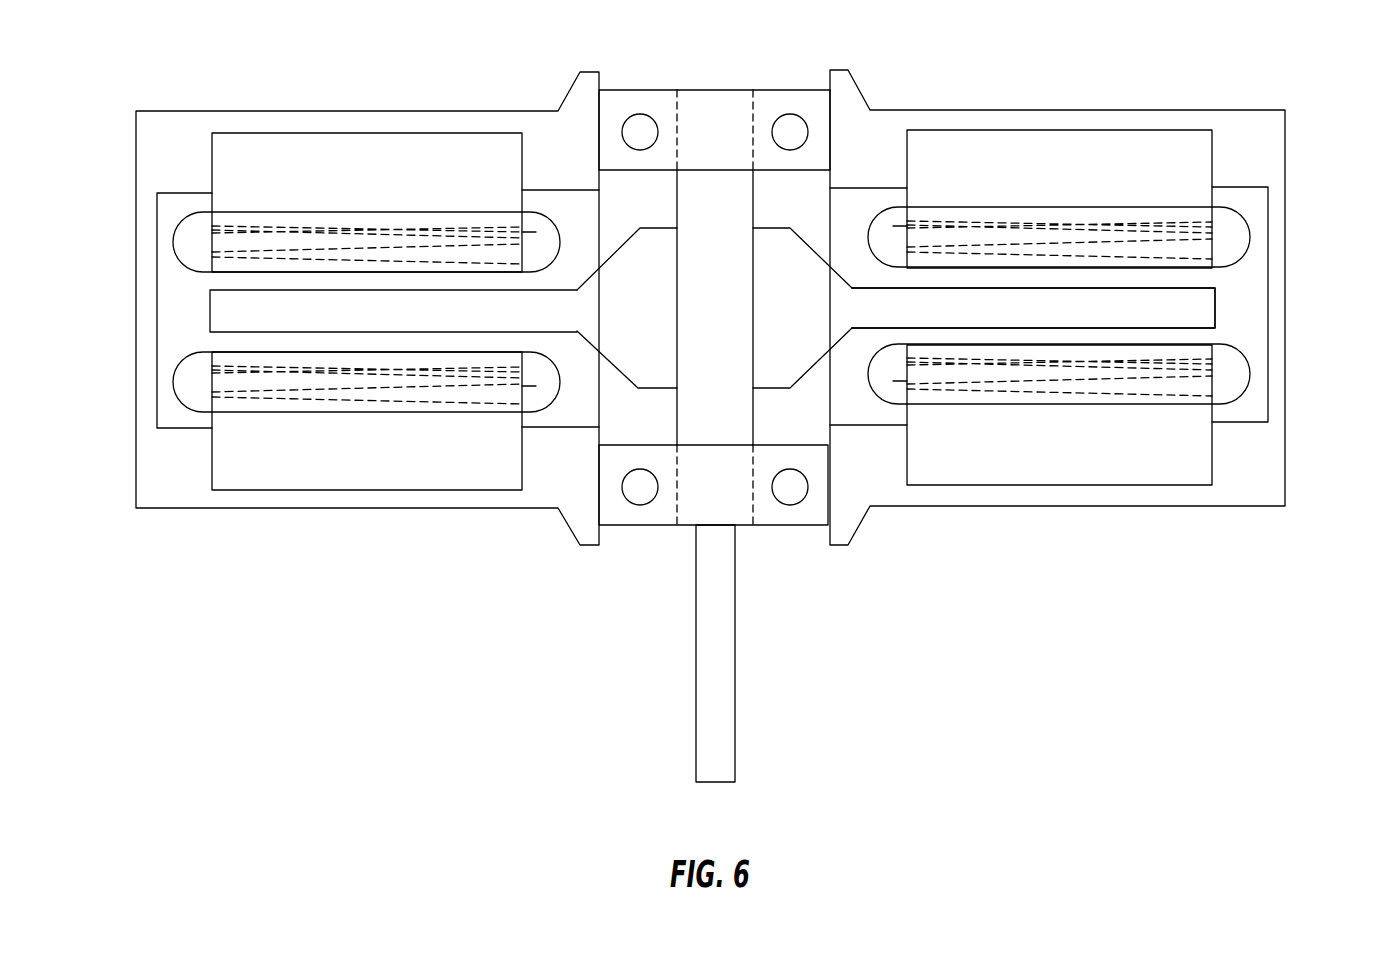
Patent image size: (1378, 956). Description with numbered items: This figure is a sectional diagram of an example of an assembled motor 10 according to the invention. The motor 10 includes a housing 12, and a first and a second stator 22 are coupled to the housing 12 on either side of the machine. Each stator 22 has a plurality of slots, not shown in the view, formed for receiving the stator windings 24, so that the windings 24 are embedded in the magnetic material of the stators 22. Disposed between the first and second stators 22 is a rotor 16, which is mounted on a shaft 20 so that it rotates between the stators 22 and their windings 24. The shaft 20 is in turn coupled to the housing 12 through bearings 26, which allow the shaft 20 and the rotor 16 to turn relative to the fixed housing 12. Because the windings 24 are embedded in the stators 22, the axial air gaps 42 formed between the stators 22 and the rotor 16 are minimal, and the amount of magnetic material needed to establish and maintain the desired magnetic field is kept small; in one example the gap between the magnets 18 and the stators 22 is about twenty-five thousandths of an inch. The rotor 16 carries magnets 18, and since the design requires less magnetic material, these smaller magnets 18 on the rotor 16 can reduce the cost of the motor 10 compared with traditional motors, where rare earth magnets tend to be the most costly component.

The motor 10 is at (326, 718).
The housing 12 is at (430, 102).
The rotor 16 is at (222, 306).
The magnets 18 is at (302, 312).
The shaft 20 is at (676, 428).
The stator 22 is at (262, 147).
The stator windings 24 is at (173, 233).
The bearings 26 is at (622, 90).
The axial air gaps 42 is at (1224, 276).